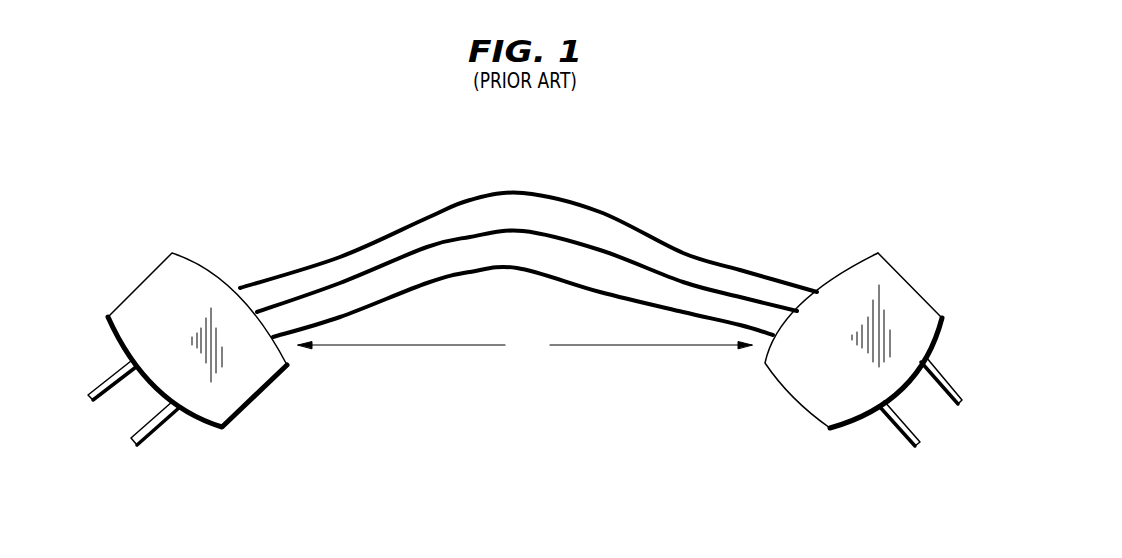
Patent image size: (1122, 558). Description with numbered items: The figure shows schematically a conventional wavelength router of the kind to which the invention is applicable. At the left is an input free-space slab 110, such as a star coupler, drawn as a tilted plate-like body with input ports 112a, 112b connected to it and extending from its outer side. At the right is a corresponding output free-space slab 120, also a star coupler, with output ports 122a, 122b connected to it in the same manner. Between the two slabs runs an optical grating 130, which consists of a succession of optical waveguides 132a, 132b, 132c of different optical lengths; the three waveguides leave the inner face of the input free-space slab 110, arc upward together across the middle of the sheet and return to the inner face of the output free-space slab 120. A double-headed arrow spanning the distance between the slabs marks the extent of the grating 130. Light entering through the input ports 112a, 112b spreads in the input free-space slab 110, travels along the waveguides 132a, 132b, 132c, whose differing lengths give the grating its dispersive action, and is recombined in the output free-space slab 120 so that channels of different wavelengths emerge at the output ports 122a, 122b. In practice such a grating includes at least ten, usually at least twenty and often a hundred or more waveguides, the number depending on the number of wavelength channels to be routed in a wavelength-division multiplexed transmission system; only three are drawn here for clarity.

The input free-space slab 110 is at (253, 397).
The input port 112a is at (162, 428).
The input port 112b is at (112, 370).
The output free-space slab 120 is at (785, 385).
The output port 122a is at (892, 425).
The output port 122b is at (940, 373).
The optical grating 130 is at (525, 347).
The optical waveguide 132a is at (427, 218).
The optical waveguide 132b is at (553, 230).
The optical waveguide 132c is at (578, 277).